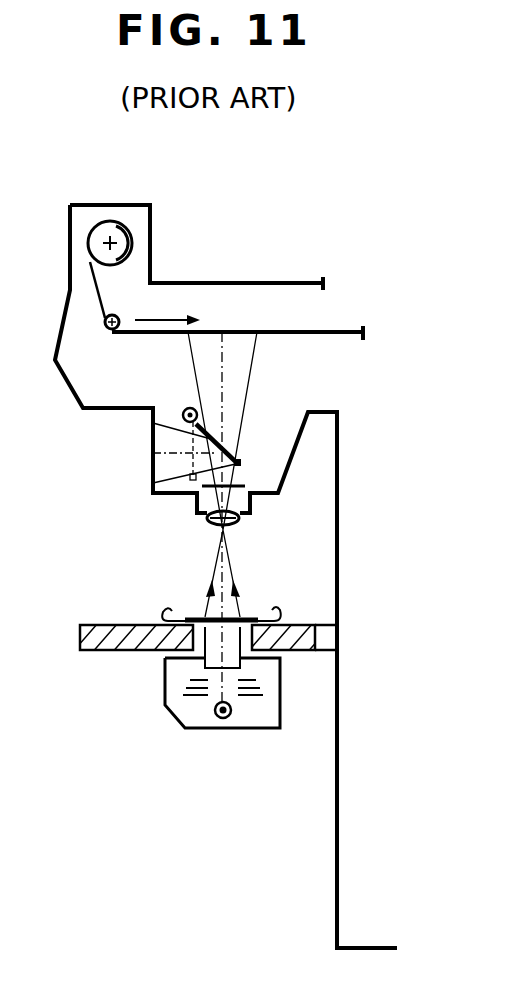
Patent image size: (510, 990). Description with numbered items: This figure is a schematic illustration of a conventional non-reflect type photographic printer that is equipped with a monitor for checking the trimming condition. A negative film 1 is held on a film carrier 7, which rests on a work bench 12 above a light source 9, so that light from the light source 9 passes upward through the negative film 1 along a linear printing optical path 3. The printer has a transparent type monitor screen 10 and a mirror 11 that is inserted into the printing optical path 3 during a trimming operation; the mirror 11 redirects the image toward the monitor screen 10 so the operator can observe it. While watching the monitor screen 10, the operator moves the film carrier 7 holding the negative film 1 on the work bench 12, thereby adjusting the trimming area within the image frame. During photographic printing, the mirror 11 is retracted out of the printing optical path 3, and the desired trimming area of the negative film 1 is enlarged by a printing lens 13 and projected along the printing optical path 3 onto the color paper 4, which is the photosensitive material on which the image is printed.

The negative film 1 is at (160, 611).
The printing optical path 3 is at (222, 372).
The color paper 4 is at (349, 332).
The film carrier 7 is at (248, 615).
The light source 9 is at (215, 712).
The monitor screen 10 is at (150, 463).
The mirror 11 is at (245, 453).
The work bench 12 is at (90, 625).
The printing lens 13 is at (207, 527).